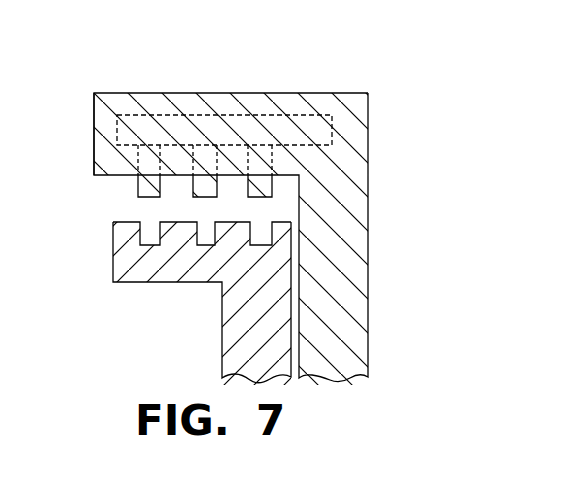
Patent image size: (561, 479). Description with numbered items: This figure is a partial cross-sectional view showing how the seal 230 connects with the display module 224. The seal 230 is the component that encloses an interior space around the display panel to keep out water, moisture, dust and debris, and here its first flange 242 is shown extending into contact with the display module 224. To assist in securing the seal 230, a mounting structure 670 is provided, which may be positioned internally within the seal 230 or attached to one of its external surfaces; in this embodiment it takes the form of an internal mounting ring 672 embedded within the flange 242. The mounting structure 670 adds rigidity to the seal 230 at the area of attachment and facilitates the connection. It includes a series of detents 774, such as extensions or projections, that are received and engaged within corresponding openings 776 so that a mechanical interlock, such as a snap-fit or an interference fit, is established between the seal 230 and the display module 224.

The seal 230 is at (372, 140).
The first flange 242 is at (146, 104).
The mounting structure 670 is at (288, 106).
The internal mounting ring 672 is at (219, 113).
The detents 774 is at (262, 191).
The display module 224 is at (168, 288).
The openings 776 is at (257, 239).